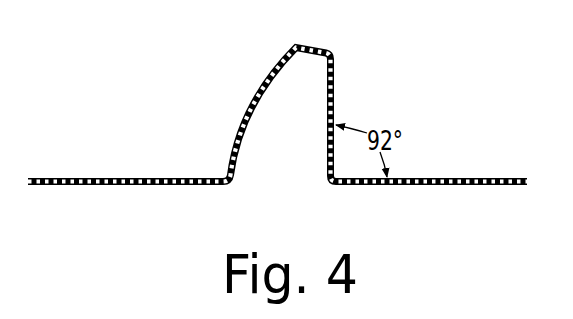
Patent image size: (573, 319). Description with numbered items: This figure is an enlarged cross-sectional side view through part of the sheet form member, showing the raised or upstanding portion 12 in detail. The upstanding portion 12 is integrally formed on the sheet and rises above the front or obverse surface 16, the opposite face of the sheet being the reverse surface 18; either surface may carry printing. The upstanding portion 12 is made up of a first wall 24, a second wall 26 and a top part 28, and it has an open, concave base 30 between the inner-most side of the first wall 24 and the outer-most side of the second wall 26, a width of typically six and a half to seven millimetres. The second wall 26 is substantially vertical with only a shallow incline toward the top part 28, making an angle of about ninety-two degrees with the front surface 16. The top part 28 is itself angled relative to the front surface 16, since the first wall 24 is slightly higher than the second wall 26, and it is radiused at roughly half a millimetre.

The upstanding portion 12 is at (255, 70).
The front surface 16 is at (487, 180).
The reverse surface 18 is at (90, 182).
The first wall 24 is at (231, 157).
The second wall 26 is at (333, 97).
The top part 28 is at (318, 50).
The base 30 is at (265, 170).